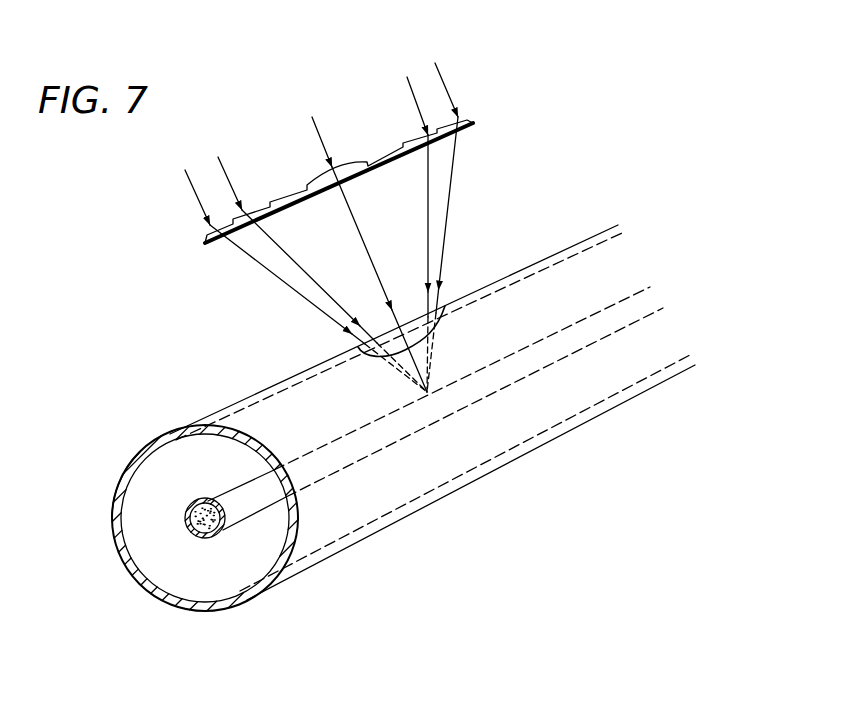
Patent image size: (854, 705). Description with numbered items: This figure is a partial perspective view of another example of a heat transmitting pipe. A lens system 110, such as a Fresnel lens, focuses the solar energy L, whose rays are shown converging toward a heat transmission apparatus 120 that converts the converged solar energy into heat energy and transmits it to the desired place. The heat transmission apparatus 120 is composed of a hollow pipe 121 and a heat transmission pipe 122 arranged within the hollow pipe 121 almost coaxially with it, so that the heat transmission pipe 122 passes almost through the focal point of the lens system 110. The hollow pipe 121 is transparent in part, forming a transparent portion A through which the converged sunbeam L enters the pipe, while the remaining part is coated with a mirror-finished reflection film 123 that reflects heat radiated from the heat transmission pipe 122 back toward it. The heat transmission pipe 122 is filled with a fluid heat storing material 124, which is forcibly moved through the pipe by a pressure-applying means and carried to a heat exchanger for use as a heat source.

The lens system 110 is at (383, 148).
The heat transmission apparatus 120 is at (329, 569).
The hollow pipe 121 is at (213, 608).
The heat transmission pipe 122 is at (200, 533).
The mirror-finished reflection film 123 is at (133, 582).
The fluid heat storing material 124 is at (197, 505).
The transparent portion A is at (417, 327).
The solar energy L is at (321, 227).